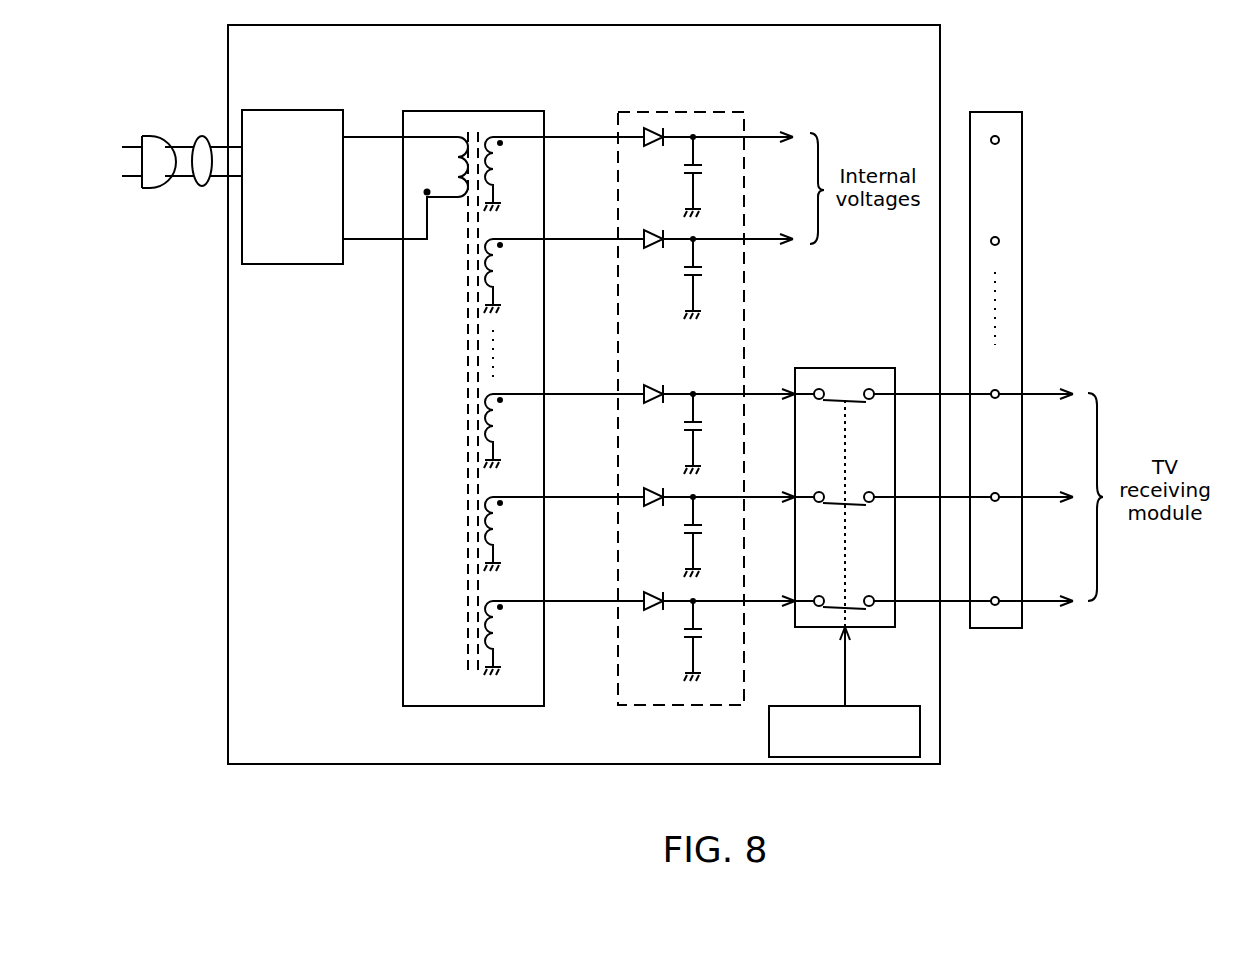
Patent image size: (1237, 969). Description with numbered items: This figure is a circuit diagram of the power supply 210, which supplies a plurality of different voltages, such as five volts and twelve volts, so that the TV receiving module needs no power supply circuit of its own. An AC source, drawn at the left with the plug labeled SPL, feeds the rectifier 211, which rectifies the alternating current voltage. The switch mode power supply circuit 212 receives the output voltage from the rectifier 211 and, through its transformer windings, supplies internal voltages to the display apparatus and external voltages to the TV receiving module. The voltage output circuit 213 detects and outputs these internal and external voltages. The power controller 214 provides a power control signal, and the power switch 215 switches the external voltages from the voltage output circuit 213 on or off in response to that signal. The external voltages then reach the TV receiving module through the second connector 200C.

The power supply 210 is at (228, 670).
The rectifier 211 is at (287, 110).
The switch mode power supply (SMPS) circuit 212 is at (477, 110).
The voltage output circuit 213 is at (690, 112).
The power controller 214 is at (920, 735).
The power switch 215 is at (857, 368).
The second connector 200C is at (1005, 112).
The power plug SPL is at (200, 187).